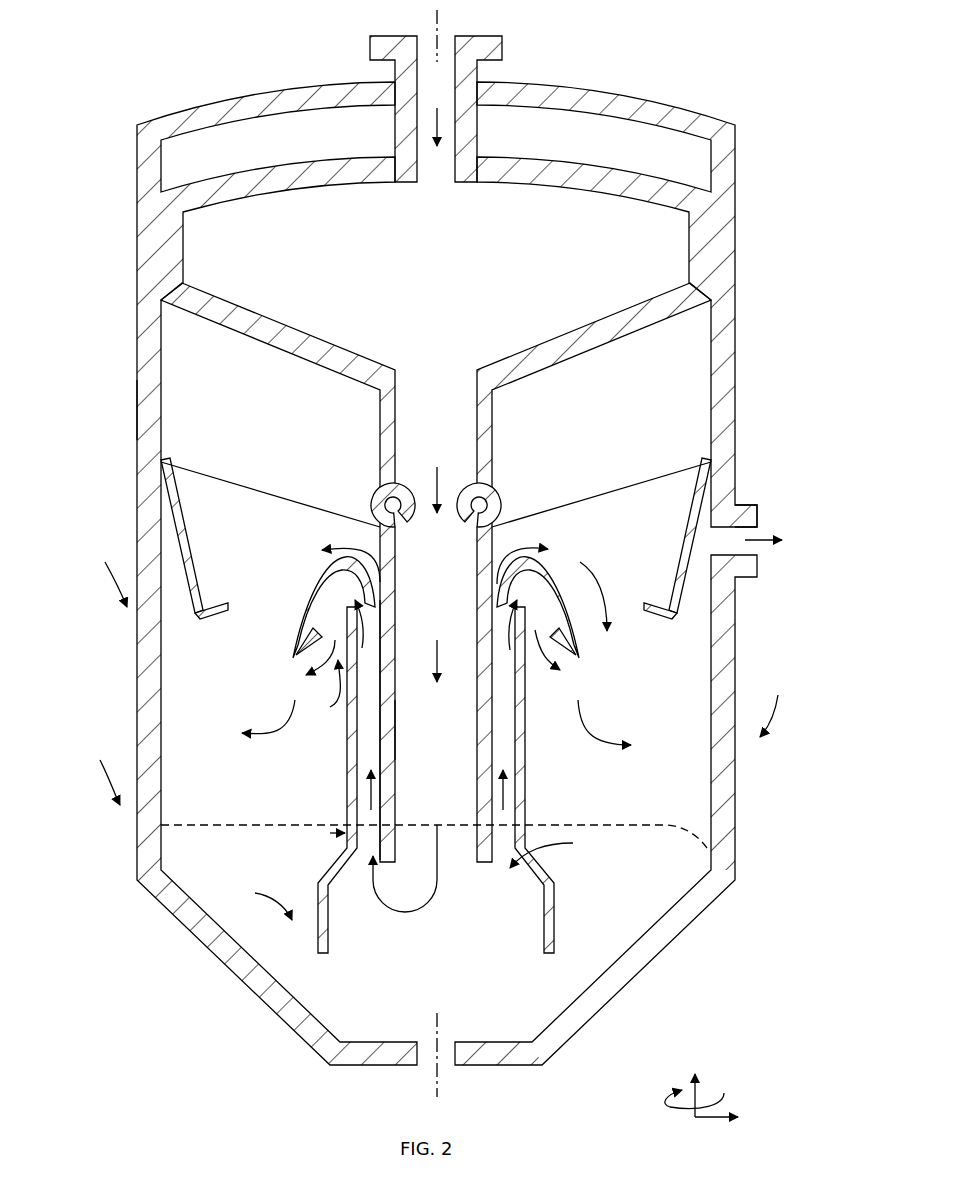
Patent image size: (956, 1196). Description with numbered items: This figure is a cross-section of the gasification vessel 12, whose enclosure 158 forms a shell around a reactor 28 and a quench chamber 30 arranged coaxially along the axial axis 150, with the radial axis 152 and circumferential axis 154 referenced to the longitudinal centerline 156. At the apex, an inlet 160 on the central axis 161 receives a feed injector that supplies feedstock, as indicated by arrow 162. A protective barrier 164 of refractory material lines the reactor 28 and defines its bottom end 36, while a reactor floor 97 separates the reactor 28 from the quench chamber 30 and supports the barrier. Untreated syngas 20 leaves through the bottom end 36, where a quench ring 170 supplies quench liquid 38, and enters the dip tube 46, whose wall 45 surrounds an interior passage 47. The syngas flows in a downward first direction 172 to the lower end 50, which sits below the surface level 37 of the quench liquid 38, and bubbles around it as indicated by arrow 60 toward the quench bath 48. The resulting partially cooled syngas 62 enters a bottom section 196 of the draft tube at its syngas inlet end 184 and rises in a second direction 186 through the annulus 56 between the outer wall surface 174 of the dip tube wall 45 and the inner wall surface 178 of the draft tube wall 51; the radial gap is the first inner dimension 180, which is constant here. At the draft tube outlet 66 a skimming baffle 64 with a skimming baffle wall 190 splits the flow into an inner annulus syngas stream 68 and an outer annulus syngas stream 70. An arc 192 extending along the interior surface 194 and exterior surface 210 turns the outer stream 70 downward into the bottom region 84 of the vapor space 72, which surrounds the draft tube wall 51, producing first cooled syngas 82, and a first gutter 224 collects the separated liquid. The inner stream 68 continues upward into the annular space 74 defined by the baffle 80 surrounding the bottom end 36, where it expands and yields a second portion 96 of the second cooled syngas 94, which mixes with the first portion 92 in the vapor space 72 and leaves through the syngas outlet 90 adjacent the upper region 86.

The gasification vessel 12 is at (197, 86).
The central axis 161 is at (437, 35).
The inlet 160 is at (498, 50).
The feedstock supply arrow 162 is at (438, 116).
The reactor 28 is at (447, 244).
The enclosure 158 is at (152, 435).
The protective barrier 164 is at (257, 340).
The bottom end 36 is at (444, 422).
The untreated syngas 20 is at (438, 488).
The outer wall surface 174 is at (378, 524).
The quench ring 170 is at (497, 510).
The dip tube 46 is at (493, 543).
The reactor floor 97 is at (668, 468).
The syngas outlet 90 is at (747, 502).
The annular space 74 is at (657, 536).
The second cooled syngas 94 is at (767, 545).
The baffle 80 is at (190, 548).
The upper region 86 is at (107, 574).
The interior surface 194 is at (328, 568).
The skimming baffle 64 is at (312, 585).
The inner annulus syngas stream 68 is at (376, 566).
The interior passage 47 is at (462, 586).
The second portion of second cooled syngas 96 is at (602, 594).
The first gutter 224 is at (298, 630).
The arc 192 is at (370, 600).
The skimming baffle wall 190 is at (297, 640).
The outer annulus syngas stream 70 is at (362, 618).
The exterior surface 210 is at (295, 655).
The first cooled syngas 82 is at (335, 660).
The first direction 172 is at (436, 658).
The draft tube outlet 66 is at (320, 692).
The dip tube wall 45 is at (393, 727).
The annulus 56 is at (371, 728).
The first portion of second cooled syngas 92 is at (273, 735).
The quench chamber 30 is at (774, 705).
The bottom region 84 is at (100, 773).
The vapor space 72 is at (237, 801).
The draft tube wall 51 is at (348, 757).
The partially cooled syngas 62 is at (502, 797).
The second direction 186 is at (372, 793).
The inner wall surface 178 is at (513, 840).
The syngas inlet end 184 is at (558, 852).
The surface level 37 is at (735, 850).
The bottom section 196 is at (263, 896).
The first inner dimension 180 is at (386, 835).
The lower end 50 is at (485, 862).
The syngas flow arrow 60 is at (408, 903).
The quench bath 48 is at (597, 960).
The quench liquid 38 is at (514, 1030).
The longitudinal centerline 156 is at (440, 1074).
The axial axis 150 is at (699, 1090).
The radial axis 152 is at (712, 1118).
The circumferential axis 154 is at (682, 1107).